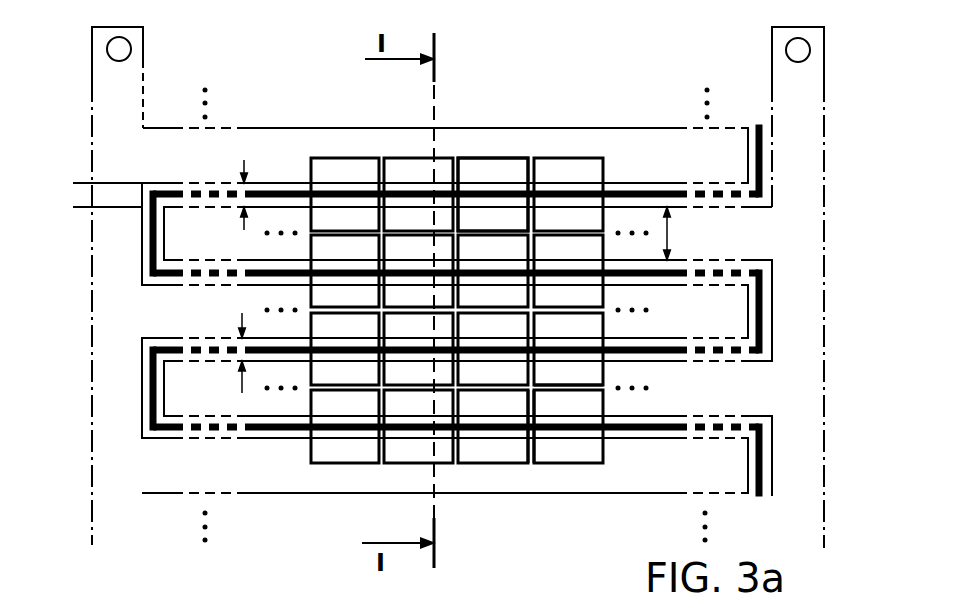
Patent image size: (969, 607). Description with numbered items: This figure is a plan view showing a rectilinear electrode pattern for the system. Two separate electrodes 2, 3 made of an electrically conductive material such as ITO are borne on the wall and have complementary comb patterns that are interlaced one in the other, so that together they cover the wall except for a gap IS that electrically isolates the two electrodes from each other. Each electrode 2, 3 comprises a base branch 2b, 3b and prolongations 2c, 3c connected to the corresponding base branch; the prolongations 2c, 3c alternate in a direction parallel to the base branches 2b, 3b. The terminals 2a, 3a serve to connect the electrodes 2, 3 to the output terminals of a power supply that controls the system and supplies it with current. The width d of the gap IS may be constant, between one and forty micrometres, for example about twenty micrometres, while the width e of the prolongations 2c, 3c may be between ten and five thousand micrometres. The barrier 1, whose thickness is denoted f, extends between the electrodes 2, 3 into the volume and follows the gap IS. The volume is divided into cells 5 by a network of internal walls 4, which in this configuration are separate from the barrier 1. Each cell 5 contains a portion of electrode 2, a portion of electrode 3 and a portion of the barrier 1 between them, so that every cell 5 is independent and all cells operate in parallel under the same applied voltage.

The barrier 1 is at (487, 192).
The electrode 2 is at (258, 48).
The terminal 2a is at (110, 46).
The base branch 2b is at (120, 105).
The prolongations 2c is at (263, 140).
The electrode 3 is at (746, 48).
The terminal 3a is at (800, 50).
The base branch 3b is at (790, 98).
The prolongations 3c is at (640, 220).
The internal walls 4 is at (533, 457).
The cells 5 is at (402, 173).
The gap IS is at (73, 175).
The width of the gap d is at (235, 342).
The width of the prolongations e is at (676, 233).
The thickness of the barrier f is at (248, 184).